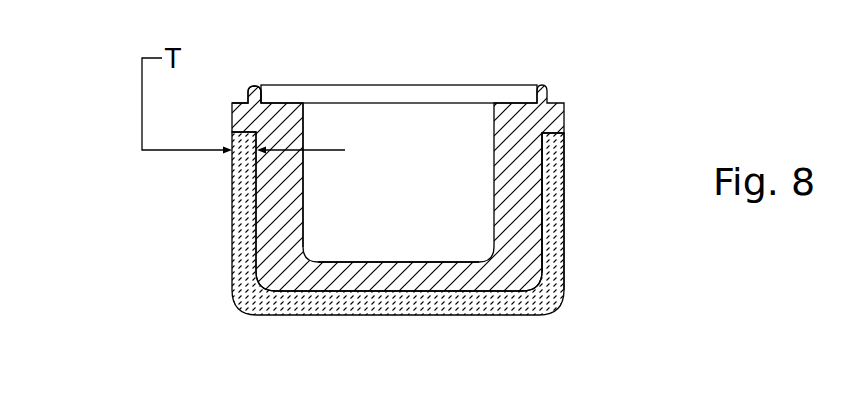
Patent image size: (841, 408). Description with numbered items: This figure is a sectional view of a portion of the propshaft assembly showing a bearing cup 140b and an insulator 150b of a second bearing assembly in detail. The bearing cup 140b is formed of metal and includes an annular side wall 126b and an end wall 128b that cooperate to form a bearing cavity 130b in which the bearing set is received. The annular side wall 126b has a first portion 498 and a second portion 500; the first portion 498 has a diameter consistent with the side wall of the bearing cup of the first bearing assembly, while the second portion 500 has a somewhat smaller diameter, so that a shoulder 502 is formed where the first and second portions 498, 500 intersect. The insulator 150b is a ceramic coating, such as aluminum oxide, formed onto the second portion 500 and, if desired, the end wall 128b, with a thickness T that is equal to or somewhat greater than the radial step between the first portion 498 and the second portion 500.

The bearing cavity 130b is at (391, 115).
The annular side wall 126b is at (530, 136).
The shoulder 502 is at (557, 157).
The second portion 500 is at (543, 241).
The first portion 498 is at (232, 107).
The bearing cup 140b is at (275, 188).
The insulator 150b is at (240, 222).
The end wall 128b is at (357, 270).